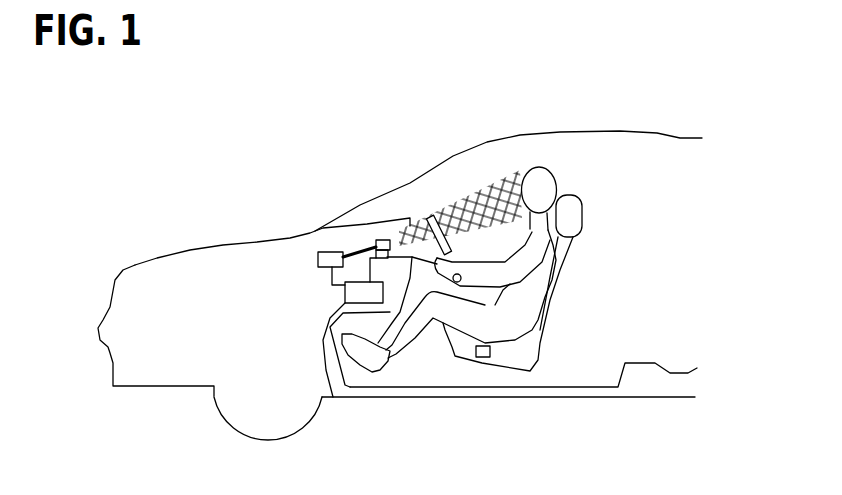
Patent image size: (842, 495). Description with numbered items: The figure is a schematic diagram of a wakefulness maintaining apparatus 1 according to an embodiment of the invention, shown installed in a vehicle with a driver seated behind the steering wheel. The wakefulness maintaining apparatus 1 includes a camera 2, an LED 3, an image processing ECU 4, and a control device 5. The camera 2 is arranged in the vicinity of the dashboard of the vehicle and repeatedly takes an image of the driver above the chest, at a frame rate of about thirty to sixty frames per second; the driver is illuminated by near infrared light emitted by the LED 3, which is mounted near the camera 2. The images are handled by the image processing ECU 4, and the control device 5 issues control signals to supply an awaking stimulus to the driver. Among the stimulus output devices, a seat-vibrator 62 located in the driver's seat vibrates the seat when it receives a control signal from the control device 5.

The wakefulness maintaining apparatus 1 is at (303, 295).
The camera 2 is at (388, 258).
The LED 3 is at (382, 240).
The image processing ECU 4 is at (332, 252).
The control device 5 is at (333, 397).
The seat-vibrator 62 is at (483, 357).